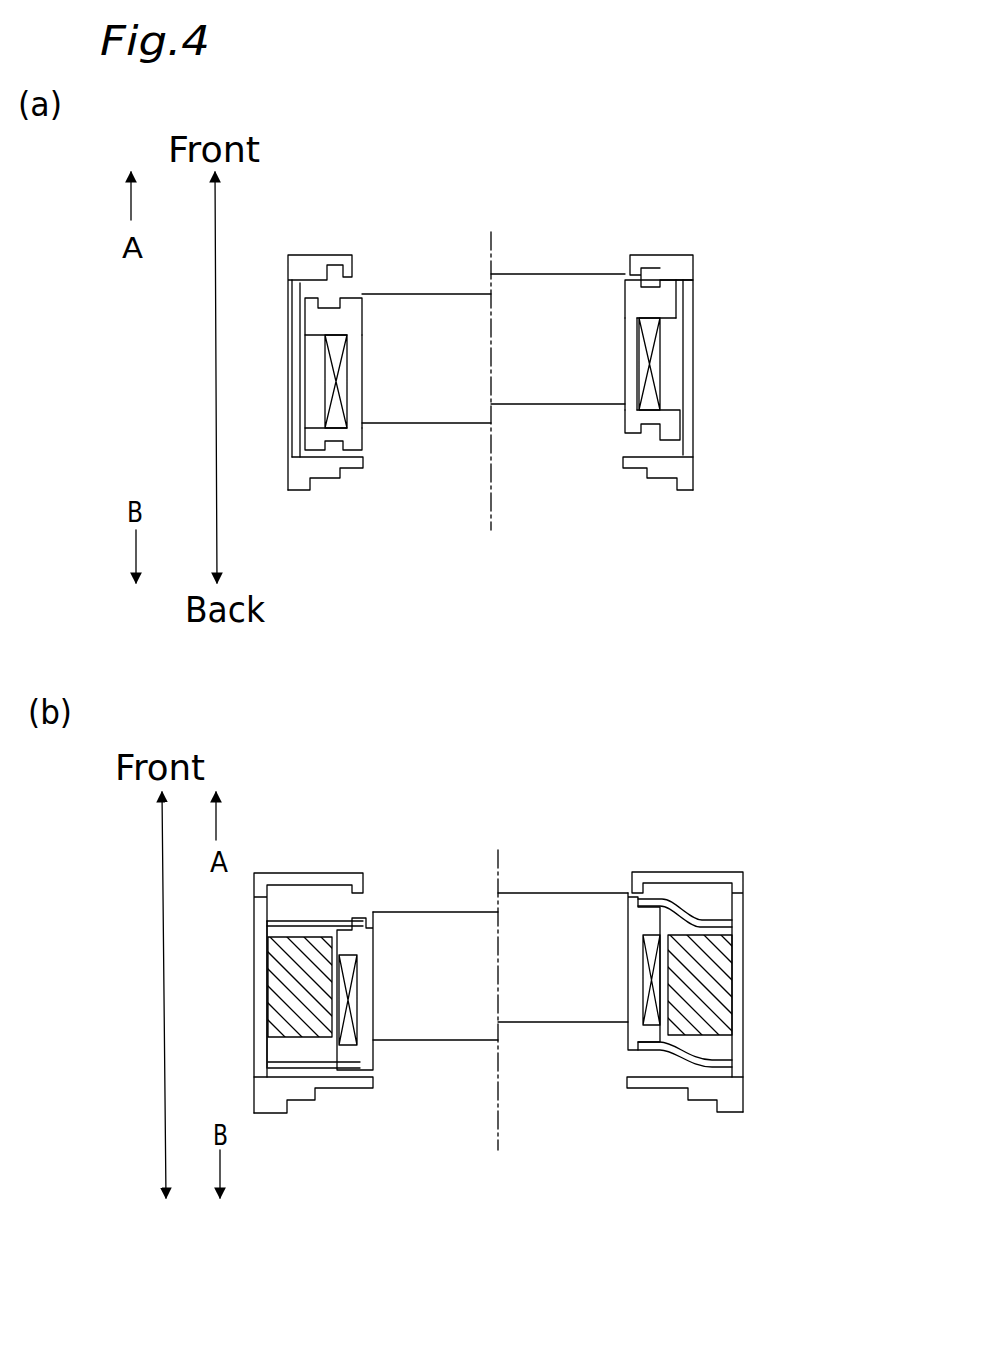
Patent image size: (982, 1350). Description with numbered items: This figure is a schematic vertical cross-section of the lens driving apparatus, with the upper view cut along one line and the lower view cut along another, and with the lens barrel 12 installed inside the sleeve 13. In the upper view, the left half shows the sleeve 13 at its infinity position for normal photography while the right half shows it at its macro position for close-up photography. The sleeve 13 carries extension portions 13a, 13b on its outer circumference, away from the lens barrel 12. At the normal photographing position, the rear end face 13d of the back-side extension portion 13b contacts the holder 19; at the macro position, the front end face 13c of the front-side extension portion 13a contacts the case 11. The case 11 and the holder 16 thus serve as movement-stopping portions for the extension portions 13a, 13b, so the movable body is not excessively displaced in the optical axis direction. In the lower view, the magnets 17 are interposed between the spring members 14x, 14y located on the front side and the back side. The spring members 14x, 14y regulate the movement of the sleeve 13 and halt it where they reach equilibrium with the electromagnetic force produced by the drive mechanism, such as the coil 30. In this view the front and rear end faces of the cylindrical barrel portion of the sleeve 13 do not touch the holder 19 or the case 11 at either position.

The case 11 is at (687, 263).
The lens barrel 12 is at (458, 397).
The sleeve 13 is at (573, 626).
The extension portion 13a is at (313, 310).
The extension portion 13b is at (670, 428).
The front end face 13c is at (667, 283).
The rear end face 13d is at (313, 440).
The spring member 14x is at (305, 1062).
The spring member 14y is at (293, 926).
The holder 16 is at (687, 298).
The magnet 17 is at (297, 963).
The holder 19 is at (687, 468).
The coil 30 is at (650, 363).